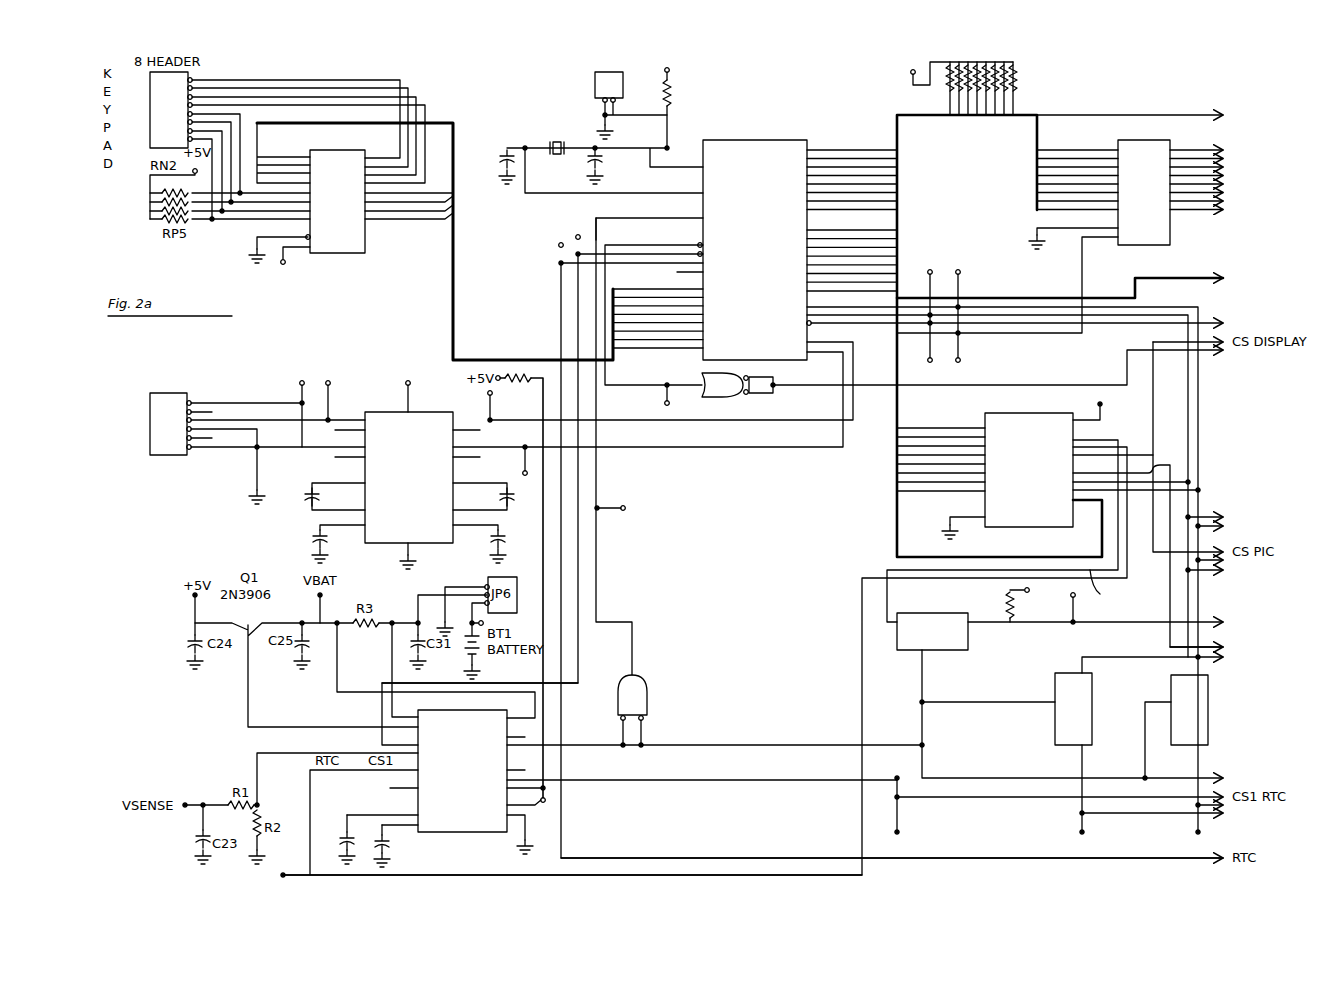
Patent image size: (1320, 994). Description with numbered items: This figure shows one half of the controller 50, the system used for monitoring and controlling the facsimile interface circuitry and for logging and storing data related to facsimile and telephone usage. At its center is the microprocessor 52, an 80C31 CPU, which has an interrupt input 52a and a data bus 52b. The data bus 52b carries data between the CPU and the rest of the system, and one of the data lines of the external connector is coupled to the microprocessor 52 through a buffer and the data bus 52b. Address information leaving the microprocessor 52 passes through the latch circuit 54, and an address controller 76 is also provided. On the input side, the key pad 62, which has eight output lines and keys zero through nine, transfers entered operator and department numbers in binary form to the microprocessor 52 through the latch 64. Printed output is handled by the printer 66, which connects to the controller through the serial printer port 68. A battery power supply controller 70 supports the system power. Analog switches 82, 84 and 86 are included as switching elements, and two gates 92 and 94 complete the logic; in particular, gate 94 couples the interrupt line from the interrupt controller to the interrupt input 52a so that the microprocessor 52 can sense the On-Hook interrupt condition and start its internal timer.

The controller 50 is at (309, 65).
The microprocessor 52 is at (732, 145).
The interrupt input 52a is at (605, 243).
The data bus 52b is at (1092, 115).
The latch circuit 54 is at (1150, 146).
The key pad 62 is at (236, 75).
The latch 64 is at (355, 250).
The printer 66 is at (165, 406).
The serial printer port 68 is at (380, 410).
The battery power supply controller 70 is at (470, 833).
The address controller 76 is at (1002, 420).
The analog switch 82 is at (910, 650).
The analog switch 84 is at (1055, 683).
The analog switch 86 is at (1171, 696).
The gate 92 is at (640, 678).
The gate 94 is at (748, 398).